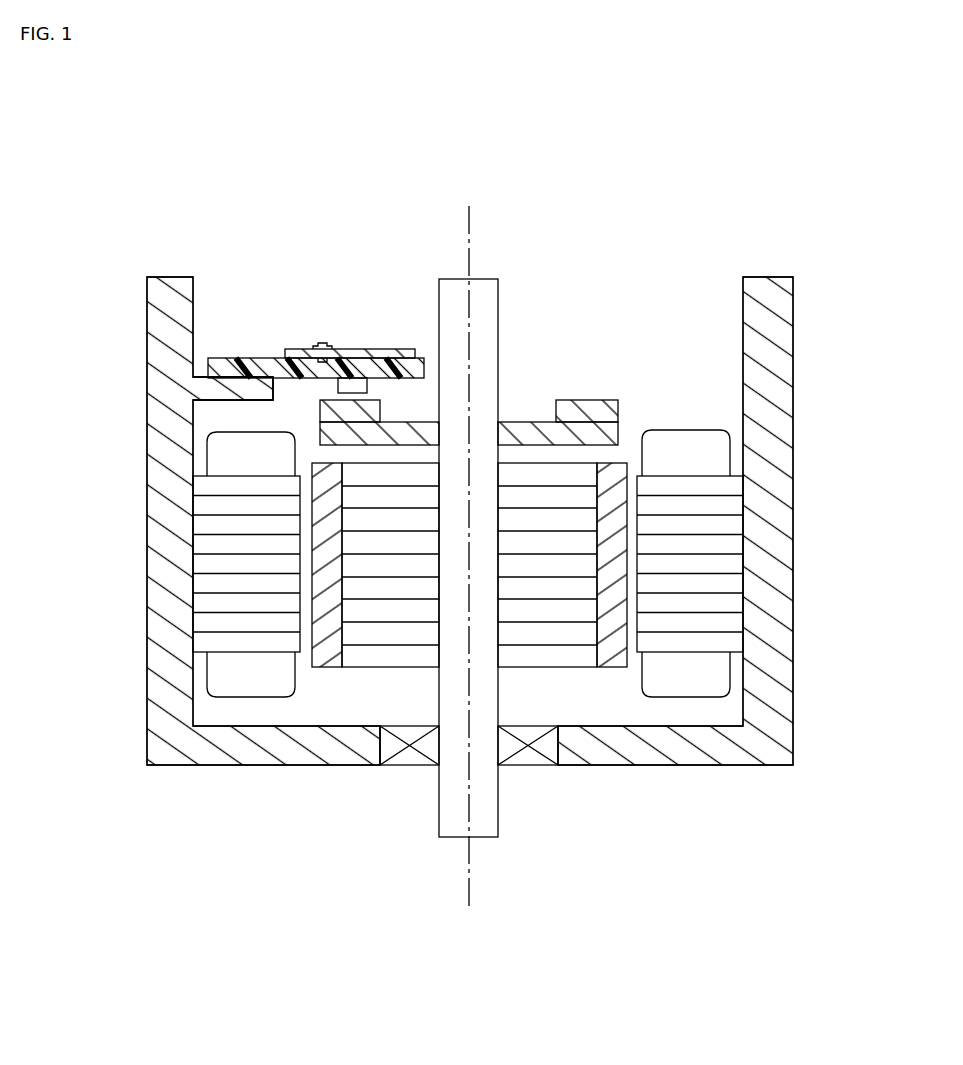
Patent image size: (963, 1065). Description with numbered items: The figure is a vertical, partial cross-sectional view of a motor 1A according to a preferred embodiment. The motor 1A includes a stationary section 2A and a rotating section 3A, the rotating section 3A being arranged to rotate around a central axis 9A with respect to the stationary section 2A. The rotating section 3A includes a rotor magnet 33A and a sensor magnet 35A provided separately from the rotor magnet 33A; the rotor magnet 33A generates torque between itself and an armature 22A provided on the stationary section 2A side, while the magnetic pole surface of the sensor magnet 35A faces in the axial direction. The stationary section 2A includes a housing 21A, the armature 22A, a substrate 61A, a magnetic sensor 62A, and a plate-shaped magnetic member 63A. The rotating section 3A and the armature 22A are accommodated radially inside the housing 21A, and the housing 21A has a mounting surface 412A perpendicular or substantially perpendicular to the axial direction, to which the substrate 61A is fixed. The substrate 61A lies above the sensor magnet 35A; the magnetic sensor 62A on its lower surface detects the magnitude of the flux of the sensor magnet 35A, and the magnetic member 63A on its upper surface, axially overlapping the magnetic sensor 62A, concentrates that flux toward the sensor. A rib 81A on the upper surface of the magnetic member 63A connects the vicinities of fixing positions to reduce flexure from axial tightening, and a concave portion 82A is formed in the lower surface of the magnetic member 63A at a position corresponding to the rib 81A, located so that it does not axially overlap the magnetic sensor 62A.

The motor 1A is at (572, 227).
The stationary section 2A is at (633, 778).
The rotating section 3A is at (589, 380).
The central axis 9A is at (469, 229).
The housing 21A is at (762, 413).
The armature 22A is at (253, 605).
The rotor magnet 33A is at (328, 640).
The sensor magnet 35A is at (370, 410).
The substrate 61A is at (254, 368).
The magnetic sensor 62A is at (355, 388).
The plate-shaped magnetic member 63A is at (383, 355).
The rib 81A is at (322, 344).
The concave portion 82A is at (318, 360).
The mounting surface 412A is at (217, 357).